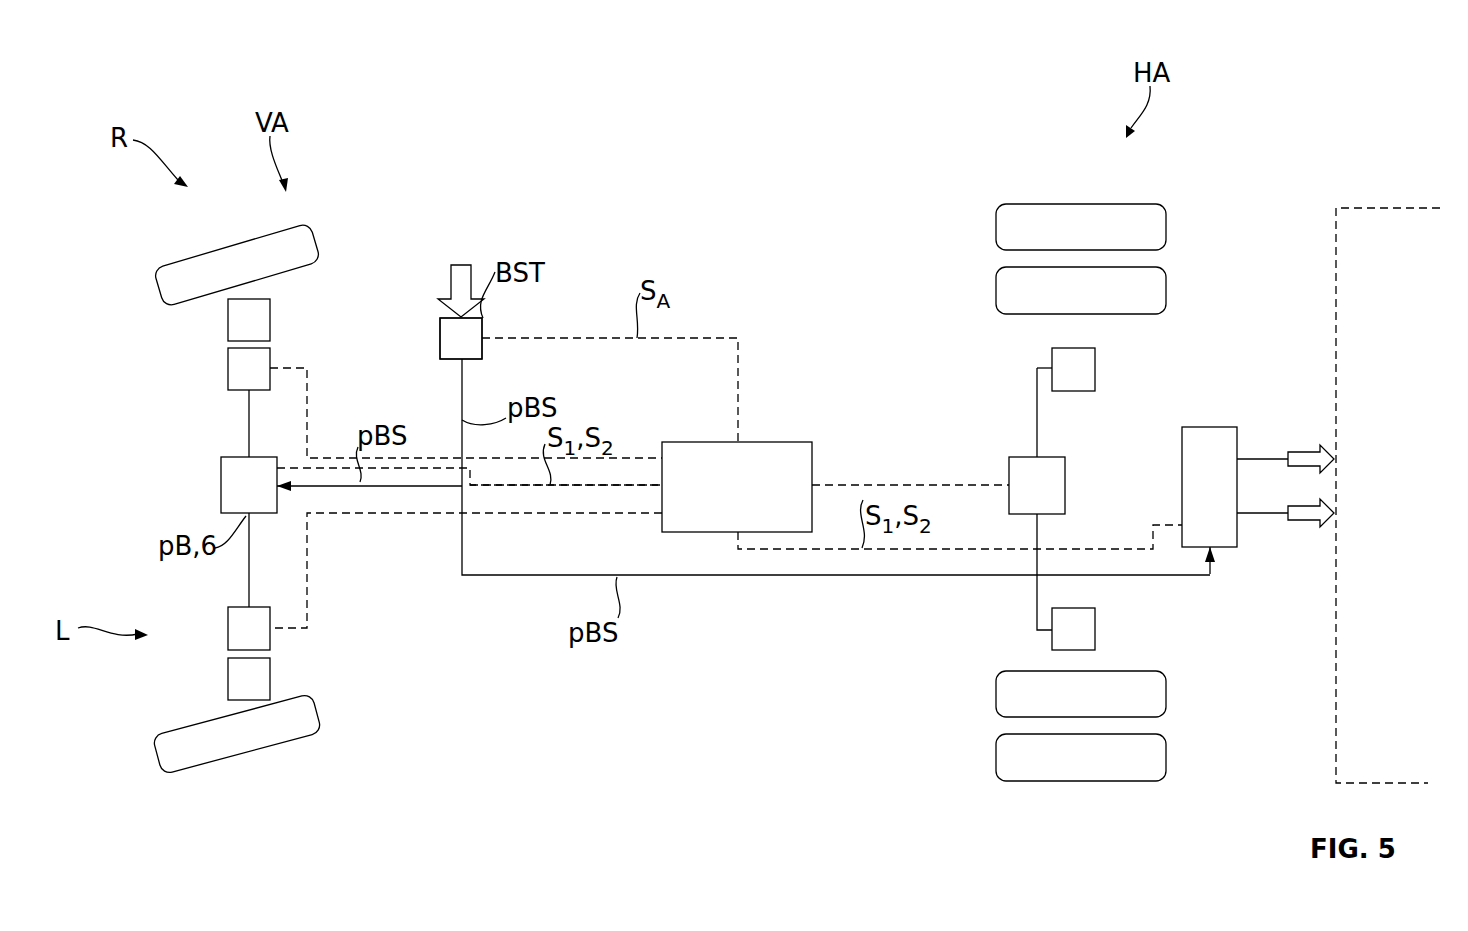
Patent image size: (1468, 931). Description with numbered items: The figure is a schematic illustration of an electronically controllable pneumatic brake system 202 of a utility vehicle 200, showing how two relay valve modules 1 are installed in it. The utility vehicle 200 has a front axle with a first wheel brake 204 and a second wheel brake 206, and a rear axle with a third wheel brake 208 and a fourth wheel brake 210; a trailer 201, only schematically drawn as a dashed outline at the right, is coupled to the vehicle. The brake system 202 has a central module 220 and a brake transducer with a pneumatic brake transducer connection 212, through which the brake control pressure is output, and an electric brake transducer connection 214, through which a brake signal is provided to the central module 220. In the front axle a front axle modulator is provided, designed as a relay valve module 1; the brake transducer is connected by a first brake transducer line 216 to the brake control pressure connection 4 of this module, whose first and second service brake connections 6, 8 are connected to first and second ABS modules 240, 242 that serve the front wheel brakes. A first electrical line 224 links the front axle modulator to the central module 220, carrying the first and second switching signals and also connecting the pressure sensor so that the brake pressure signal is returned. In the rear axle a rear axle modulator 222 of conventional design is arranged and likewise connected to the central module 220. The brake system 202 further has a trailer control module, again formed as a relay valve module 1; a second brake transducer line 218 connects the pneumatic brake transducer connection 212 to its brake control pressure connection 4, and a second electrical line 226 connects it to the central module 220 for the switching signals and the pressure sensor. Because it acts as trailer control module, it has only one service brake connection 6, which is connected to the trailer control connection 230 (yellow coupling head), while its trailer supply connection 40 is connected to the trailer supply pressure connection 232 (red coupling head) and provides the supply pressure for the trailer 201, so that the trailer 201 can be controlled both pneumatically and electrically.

The utility vehicle 200 is at (229, 84).
The trailer 201 is at (1372, 196).
The brake system 202 is at (657, 191).
The first wheel brake 204 is at (270, 675).
The second wheel brake 206 is at (270, 317).
The third wheel brake 208 is at (1095, 627).
The fourth wheel brake 210 is at (1095, 368).
The pneumatic brake transducer connection 212 is at (462, 360).
The electric brake transducer connection 214 is at (482, 335).
The first brake transducer line 216 is at (438, 484).
The second brake transducer line 218 is at (710, 577).
The central module 220 is at (737, 487).
The rear axle modulator 222 is at (1065, 483).
The first electrical line 224 is at (630, 485).
The second electrical line 226 is at (972, 548).
The brake pressure output 230 is at (1335, 445).
The trailer supply pressure connection 232 is at (1335, 502).
The first ABS module 240 is at (270, 353).
The second ABS module 242 is at (270, 632).
The brake control pressure connection 4 is at (280, 493).
The relay valve module 1 is at (220, 478).
The first service brake connection 6 is at (1245, 458).
The second service brake connection 8 is at (248, 456).
The trailer supply connection 40 is at (1237, 513).